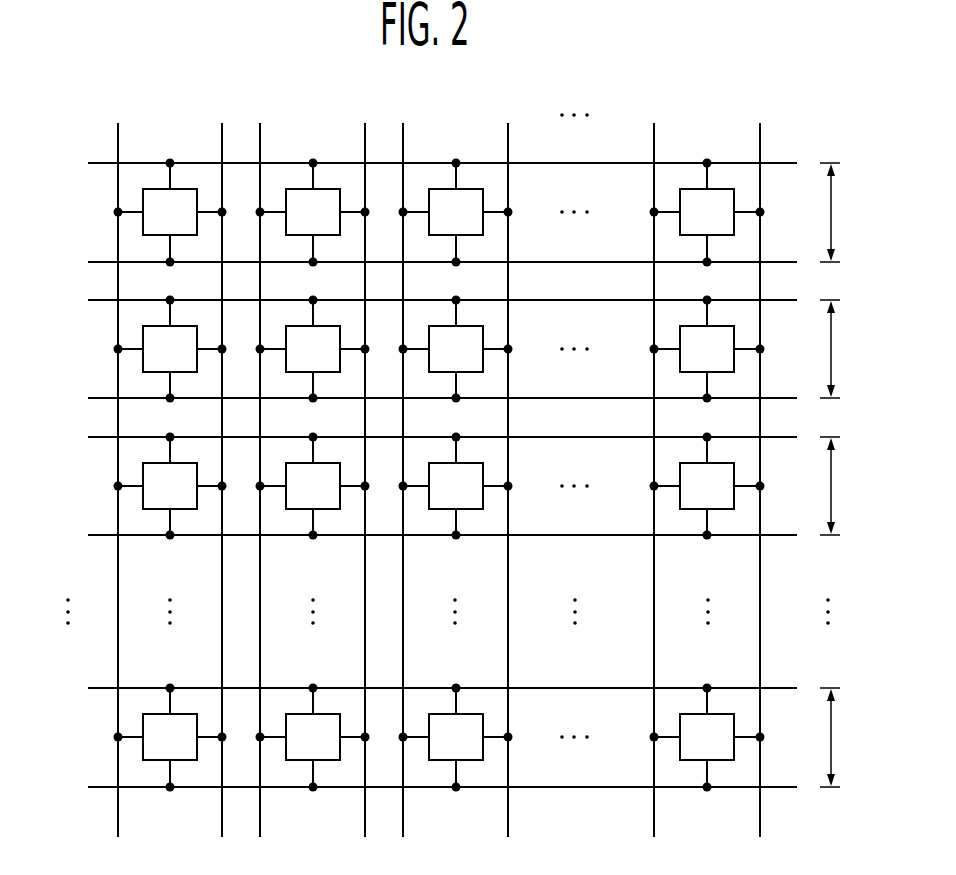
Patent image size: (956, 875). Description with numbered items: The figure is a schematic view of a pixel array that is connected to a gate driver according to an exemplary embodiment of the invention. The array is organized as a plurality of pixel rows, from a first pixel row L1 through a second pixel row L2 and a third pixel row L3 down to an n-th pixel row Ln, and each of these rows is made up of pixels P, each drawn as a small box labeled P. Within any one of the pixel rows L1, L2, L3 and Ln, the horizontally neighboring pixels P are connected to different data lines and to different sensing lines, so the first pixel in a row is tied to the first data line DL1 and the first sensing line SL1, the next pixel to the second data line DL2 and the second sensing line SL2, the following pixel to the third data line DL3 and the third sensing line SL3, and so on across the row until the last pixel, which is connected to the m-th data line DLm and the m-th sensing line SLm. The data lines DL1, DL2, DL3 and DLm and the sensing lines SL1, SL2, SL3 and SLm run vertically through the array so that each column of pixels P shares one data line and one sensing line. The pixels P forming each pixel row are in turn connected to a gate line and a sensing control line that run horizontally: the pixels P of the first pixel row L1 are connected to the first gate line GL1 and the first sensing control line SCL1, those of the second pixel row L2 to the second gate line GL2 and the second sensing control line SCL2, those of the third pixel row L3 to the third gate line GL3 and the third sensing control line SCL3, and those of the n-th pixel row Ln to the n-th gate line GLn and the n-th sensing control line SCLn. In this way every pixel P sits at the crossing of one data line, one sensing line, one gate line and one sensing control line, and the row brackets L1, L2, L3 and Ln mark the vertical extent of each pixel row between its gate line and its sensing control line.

The first data line DL1 is at (118, 465).
The first sensing line SL1 is at (221, 465).
The second data line DL2 is at (259, 465).
The second sensing line SL2 is at (364, 465).
The third data line DL3 is at (402, 465).
The third sensing line SL3 is at (507, 465).
The m-th data line DLm is at (654, 465).
The m-th sensing line SLm is at (760, 465).
The first gate line GL1 is at (423, 165).
The first sensing control line SCL1 is at (421, 263).
The second gate line GL2 is at (423, 302).
The second sensing control line SCL2 is at (421, 399).
The third gate line GL3 is at (423, 439).
The third sensing control line SCL3 is at (421, 536).
The n-th gate line GLn is at (423, 691).
The n-th sensing control line SCLn is at (421, 789).
The pixel P is at (439, 475).
The first pixel row L1 is at (838, 212).
The second pixel row L2 is at (838, 349).
The third pixel row L3 is at (838, 486).
The n-th pixel row Ln is at (839, 737).